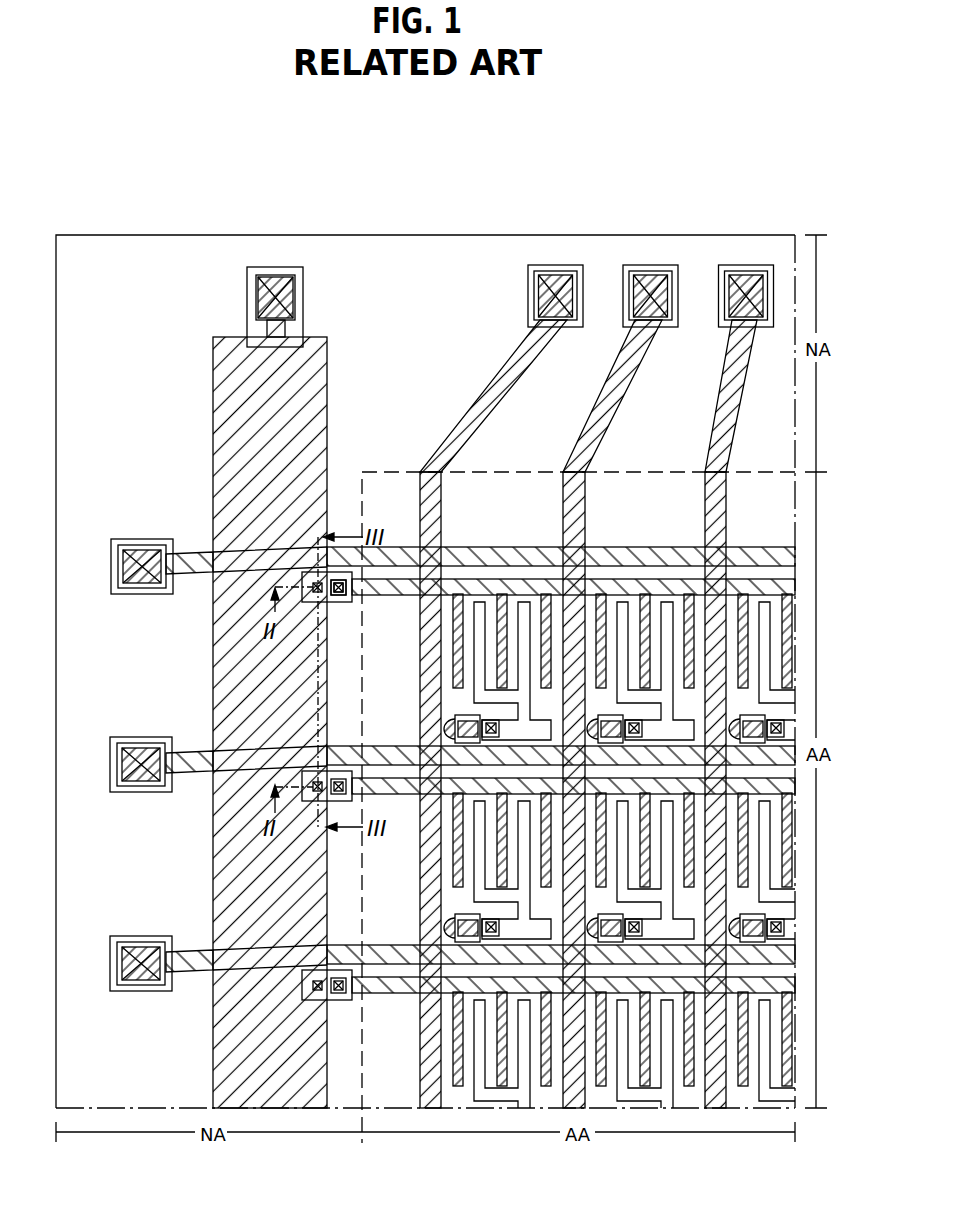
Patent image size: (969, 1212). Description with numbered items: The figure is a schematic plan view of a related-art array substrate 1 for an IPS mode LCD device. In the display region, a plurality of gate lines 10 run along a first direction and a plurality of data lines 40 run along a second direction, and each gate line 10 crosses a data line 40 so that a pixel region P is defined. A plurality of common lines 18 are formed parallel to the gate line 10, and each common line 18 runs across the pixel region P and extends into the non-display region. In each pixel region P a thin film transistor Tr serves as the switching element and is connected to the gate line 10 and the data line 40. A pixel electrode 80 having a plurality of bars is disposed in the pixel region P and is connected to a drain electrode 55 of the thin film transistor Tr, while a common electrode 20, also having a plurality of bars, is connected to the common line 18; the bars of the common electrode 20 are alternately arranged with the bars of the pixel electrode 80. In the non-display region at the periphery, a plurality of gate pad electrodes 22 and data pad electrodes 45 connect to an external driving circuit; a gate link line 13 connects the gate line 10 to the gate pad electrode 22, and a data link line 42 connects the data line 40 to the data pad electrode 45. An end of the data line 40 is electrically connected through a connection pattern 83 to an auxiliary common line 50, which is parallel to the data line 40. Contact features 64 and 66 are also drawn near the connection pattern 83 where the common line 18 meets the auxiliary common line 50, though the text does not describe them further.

The array substrate 1 is at (688, 194).
The gate line 10 is at (453, 557).
The gate link line 13 is at (188, 553).
The common line 18 is at (493, 578).
The common electrode 20 is at (601, 598).
The gate pad electrode 22 is at (141, 552).
The data line 40 is at (584, 900).
The data link line 42 is at (484, 368).
The data pad electrode 45 is at (537, 296).
The auxiliary common line 50 is at (314, 412).
The drain electrode 55 is at (495, 926).
The second contact hole 64 is at (342, 598).
The first contact hole 66 is at (316, 593).
The pixel electrode 80 is at (525, 603).
The connection pattern 83 is at (333, 603).
The thin film transistor Tr is at (460, 719).
The pixel region P is at (697, 702).